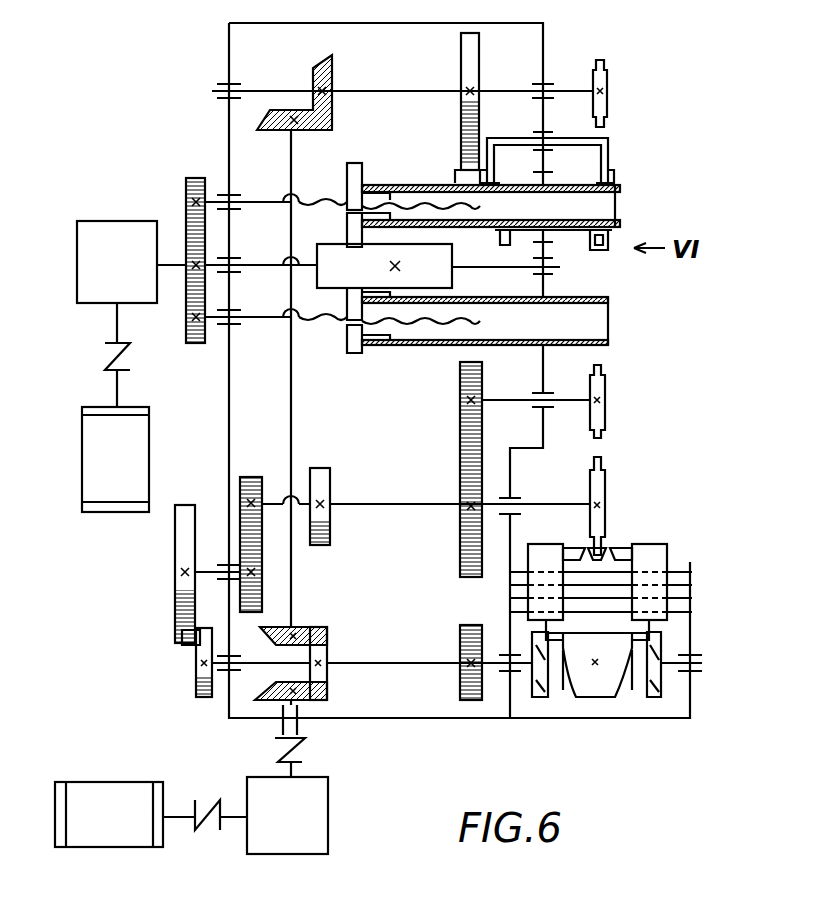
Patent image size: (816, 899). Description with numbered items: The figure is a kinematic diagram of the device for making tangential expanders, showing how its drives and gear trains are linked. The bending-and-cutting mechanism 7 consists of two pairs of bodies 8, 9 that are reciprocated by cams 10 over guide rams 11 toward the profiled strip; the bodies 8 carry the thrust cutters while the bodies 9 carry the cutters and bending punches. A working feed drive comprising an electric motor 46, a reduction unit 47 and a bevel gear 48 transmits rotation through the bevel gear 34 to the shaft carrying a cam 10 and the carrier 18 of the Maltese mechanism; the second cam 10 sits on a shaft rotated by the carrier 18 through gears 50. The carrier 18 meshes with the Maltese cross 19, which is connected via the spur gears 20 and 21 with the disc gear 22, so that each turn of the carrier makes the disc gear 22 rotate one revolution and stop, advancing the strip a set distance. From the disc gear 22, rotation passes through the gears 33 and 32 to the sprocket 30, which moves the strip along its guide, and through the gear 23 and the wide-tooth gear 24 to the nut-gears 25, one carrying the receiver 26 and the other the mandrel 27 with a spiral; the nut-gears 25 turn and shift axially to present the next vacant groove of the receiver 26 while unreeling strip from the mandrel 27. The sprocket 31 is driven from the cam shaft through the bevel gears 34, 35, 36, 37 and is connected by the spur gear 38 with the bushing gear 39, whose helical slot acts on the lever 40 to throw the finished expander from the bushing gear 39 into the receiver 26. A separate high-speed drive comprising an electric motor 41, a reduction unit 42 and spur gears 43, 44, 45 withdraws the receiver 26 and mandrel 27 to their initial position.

The bending-and-cutting mechanism 7 is at (600, 713).
The bodies 8 is at (642, 562).
The bodies 9 is at (547, 553).
The cams 10 is at (653, 695).
The guide rams 11 is at (665, 600).
The carrier 18 is at (196, 680).
The Maltese cross 19 is at (175, 588).
The spur gear 20 is at (258, 557).
The spur gear 21 is at (251, 477).
The disc gear 22 is at (605, 488).
The gear 23 is at (330, 483).
The wide-tooth gear 24 is at (329, 247).
The nut-gears 25 is at (347, 171).
The receiver 26 is at (624, 192).
The mandrel 27 is at (611, 344).
The sprocket (disc) 30 is at (605, 402).
The sprocket (disc) 31 is at (608, 73).
The gear 32 is at (460, 380).
The gear 33 is at (460, 553).
The bevel gear 34 is at (327, 692).
The bevel gear 35 is at (312, 627).
The bevel gear 36 is at (280, 130).
The bevel gear 37 is at (313, 72).
The spur gear 38 is at (461, 61).
The bushing gear 39 is at (578, 240).
The lever 40 is at (608, 150).
The electric motor 41 is at (137, 443).
The reduction unit 42 is at (113, 221).
The spur gear 43 is at (185, 230).
The spur gear 44 is at (186, 337).
The spur gear 45 is at (197, 178).
The electric motor 46 is at (110, 790).
The reduction unit 47 is at (318, 803).
The bevel gear 48 is at (276, 708).
The gears 50 is at (462, 688).